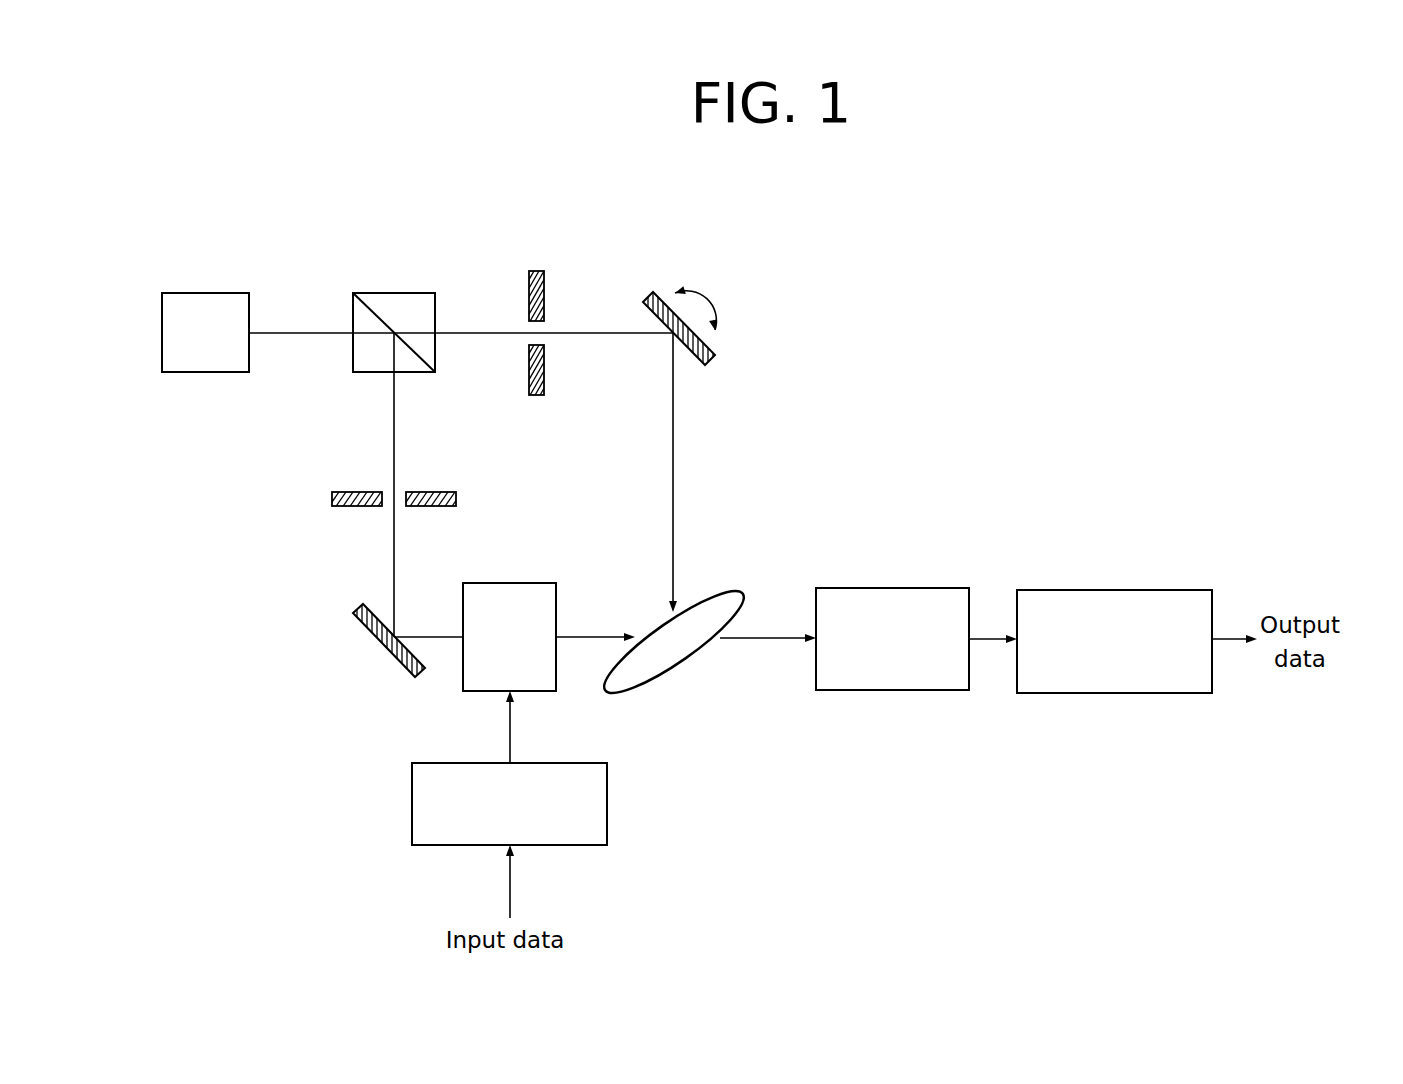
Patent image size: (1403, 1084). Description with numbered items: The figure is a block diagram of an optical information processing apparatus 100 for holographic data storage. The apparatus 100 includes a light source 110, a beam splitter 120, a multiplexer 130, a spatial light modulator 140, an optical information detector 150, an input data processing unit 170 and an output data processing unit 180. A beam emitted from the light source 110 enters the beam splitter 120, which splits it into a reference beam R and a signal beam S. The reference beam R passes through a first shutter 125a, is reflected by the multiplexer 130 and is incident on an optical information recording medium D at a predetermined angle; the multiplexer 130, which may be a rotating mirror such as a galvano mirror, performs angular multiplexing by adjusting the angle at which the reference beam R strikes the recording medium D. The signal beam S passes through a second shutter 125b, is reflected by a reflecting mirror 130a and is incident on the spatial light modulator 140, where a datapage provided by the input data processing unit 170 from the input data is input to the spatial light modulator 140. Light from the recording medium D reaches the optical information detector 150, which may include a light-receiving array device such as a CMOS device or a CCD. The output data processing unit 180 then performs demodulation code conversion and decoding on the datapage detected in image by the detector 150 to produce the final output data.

The optical information processing apparatus 100 is at (816, 231).
The light source 110 is at (233, 293).
The beam splitter 120 is at (422, 293).
The first shutter 125a is at (543, 271).
The second shutter 125b is at (455, 492).
The multiplexer 130 is at (712, 360).
The reflecting mirror 130a is at (385, 648).
The spatial light modulator 140 is at (537, 583).
The optical information detector 150 is at (880, 588).
The input data processing unit 170 is at (570, 763).
The output data processing unit 180 is at (1107, 590).
The optical information recording medium D is at (733, 593).
The signal beam S is at (605, 633).
The reference beam R is at (675, 452).